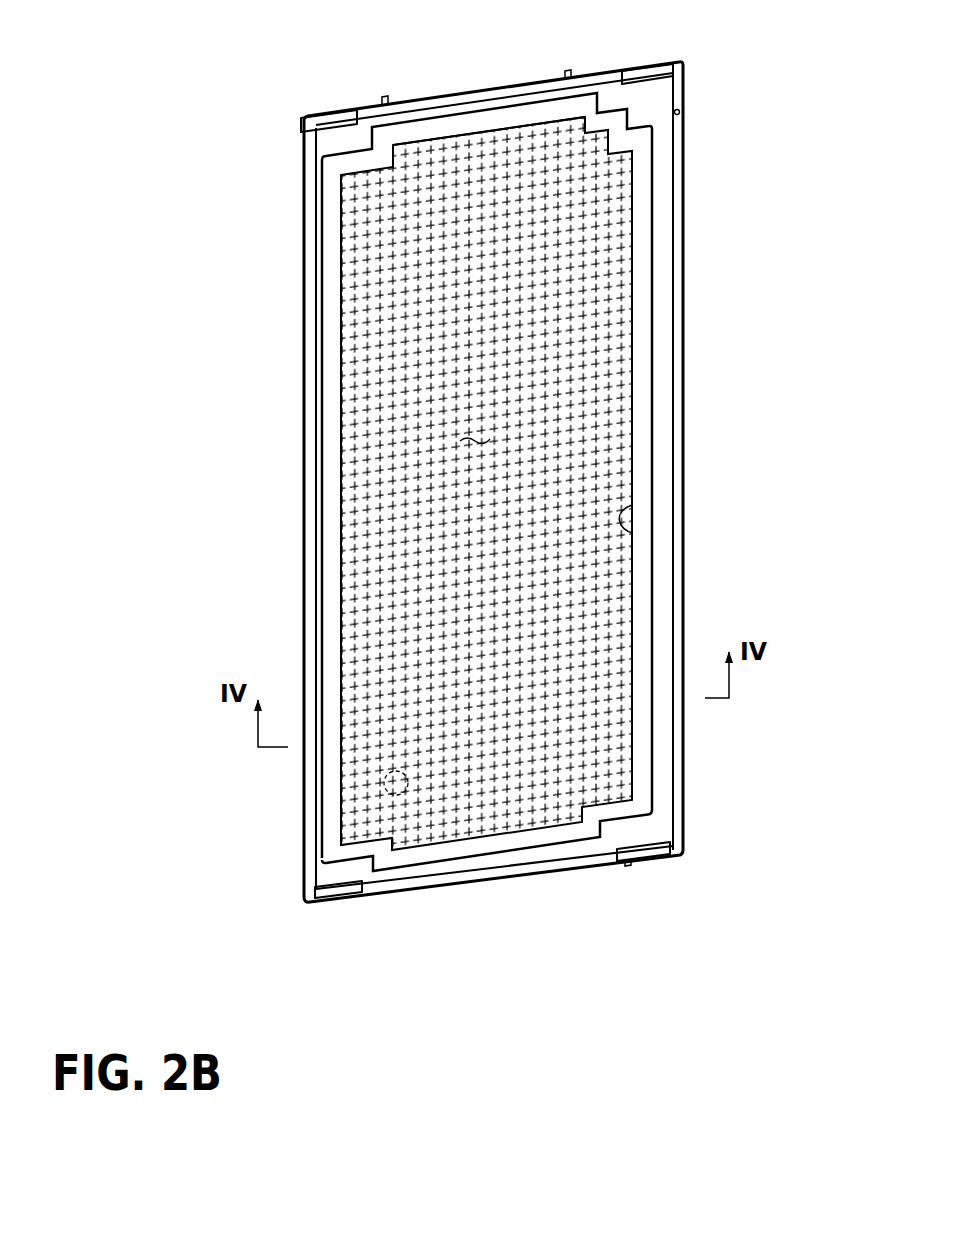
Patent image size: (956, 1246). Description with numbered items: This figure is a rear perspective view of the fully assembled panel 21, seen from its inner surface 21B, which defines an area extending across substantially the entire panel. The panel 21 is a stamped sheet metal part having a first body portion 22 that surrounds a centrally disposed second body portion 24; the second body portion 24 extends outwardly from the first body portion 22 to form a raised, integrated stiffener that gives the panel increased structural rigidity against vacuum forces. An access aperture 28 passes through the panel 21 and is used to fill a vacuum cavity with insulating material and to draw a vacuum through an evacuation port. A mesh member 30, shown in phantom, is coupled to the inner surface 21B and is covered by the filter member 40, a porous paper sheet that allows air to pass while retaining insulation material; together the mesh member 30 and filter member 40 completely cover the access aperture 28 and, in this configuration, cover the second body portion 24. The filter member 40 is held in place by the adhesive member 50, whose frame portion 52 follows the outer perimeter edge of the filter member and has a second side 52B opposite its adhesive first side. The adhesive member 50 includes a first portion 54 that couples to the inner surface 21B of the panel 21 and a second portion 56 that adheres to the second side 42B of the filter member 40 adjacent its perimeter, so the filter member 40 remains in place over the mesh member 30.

The panel 21 is at (348, 90).
The inner surface 21B is at (457, 108).
The first body portion 22 is at (347, 142).
The second body portion 24 is at (515, 150).
The access aperture 28 is at (386, 794).
The mesh member 30 is at (491, 425).
The filter member 40 is at (567, 310).
The second side 42B is at (477, 428).
The adhesive member 50 is at (655, 409).
The frame portion 52 is at (640, 495).
The second side 52B is at (640, 313).
The first portion 54 is at (647, 468).
The second portion 56 is at (632, 532).